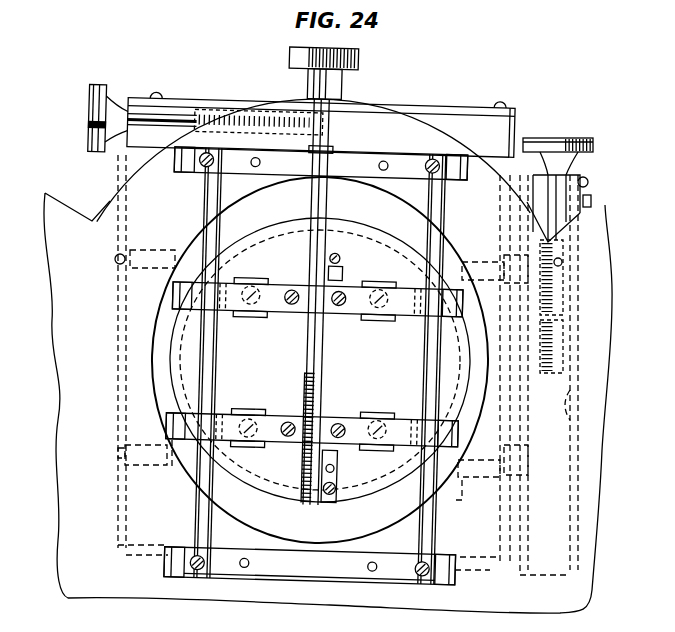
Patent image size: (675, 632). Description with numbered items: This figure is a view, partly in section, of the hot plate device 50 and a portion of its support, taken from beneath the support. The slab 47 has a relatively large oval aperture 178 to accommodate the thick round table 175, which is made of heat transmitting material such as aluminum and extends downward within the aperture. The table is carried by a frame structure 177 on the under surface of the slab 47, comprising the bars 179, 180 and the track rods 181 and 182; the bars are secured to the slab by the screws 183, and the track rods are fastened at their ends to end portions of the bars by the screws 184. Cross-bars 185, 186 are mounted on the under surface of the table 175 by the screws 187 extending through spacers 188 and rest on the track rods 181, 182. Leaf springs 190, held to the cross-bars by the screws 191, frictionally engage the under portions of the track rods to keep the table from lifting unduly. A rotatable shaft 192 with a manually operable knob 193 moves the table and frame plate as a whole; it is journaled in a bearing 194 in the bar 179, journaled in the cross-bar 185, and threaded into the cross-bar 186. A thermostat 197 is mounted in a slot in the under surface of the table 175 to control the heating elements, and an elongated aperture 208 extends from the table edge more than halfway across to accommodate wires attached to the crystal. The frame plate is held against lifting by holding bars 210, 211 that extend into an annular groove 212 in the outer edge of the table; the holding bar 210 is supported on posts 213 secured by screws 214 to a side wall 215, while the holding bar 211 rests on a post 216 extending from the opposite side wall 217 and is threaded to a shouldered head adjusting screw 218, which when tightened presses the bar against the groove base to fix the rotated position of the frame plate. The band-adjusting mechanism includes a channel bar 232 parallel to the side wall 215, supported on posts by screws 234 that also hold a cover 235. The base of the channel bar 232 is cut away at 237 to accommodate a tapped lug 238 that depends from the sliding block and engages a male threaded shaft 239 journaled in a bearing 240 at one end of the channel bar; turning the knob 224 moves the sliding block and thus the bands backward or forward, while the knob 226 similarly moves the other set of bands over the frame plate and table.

The slab 47 is at (442, 146).
The hot plate device 50 is at (530, 140).
The round table 175 is at (290, 515).
The frame structure 177 is at (318, 586).
The oval aperture 178 is at (375, 202).
The bar 179 is at (359, 160).
The bar 180 is at (346, 586).
The track rod 181 is at (444, 212).
The track rod 182 is at (200, 210).
The screws 183 is at (262, 164).
The screws 184 is at (207, 168).
The cross-bar 185 is at (458, 303).
The cross-bar 186 is at (173, 430).
The screws 187 is at (262, 302).
The spacers 188 is at (258, 320).
The leaf springs 190 is at (230, 312).
The screws 191 is at (342, 307).
The rotatable shaft 192 is at (330, 205).
The knob 193 is at (291, 57).
The bearing 194 is at (331, 152).
The thermostat 197 is at (344, 364).
The elongated aperture 208 is at (312, 512).
The holding bar 210 is at (460, 490).
The holding bar 211 is at (172, 470).
The annular groove 212 is at (275, 236).
The posts 213 is at (487, 262).
The screws 214 is at (510, 245).
The side wall 215 is at (512, 440).
The post 216 is at (147, 252).
The side wall 217 is at (118, 395).
The shouldered head adjusting screw 218 is at (140, 465).
The knob 224 is at (576, 142).
The knob 226 is at (84, 102).
The channel bar 232 is at (570, 422).
The screws 234 is at (591, 203).
The cover 235 is at (575, 405).
The cut away 237 is at (565, 298).
The tapped lug 238 is at (276, 97).
The male threaded shaft 239 is at (584, 184).
The bearing 240 is at (572, 212).